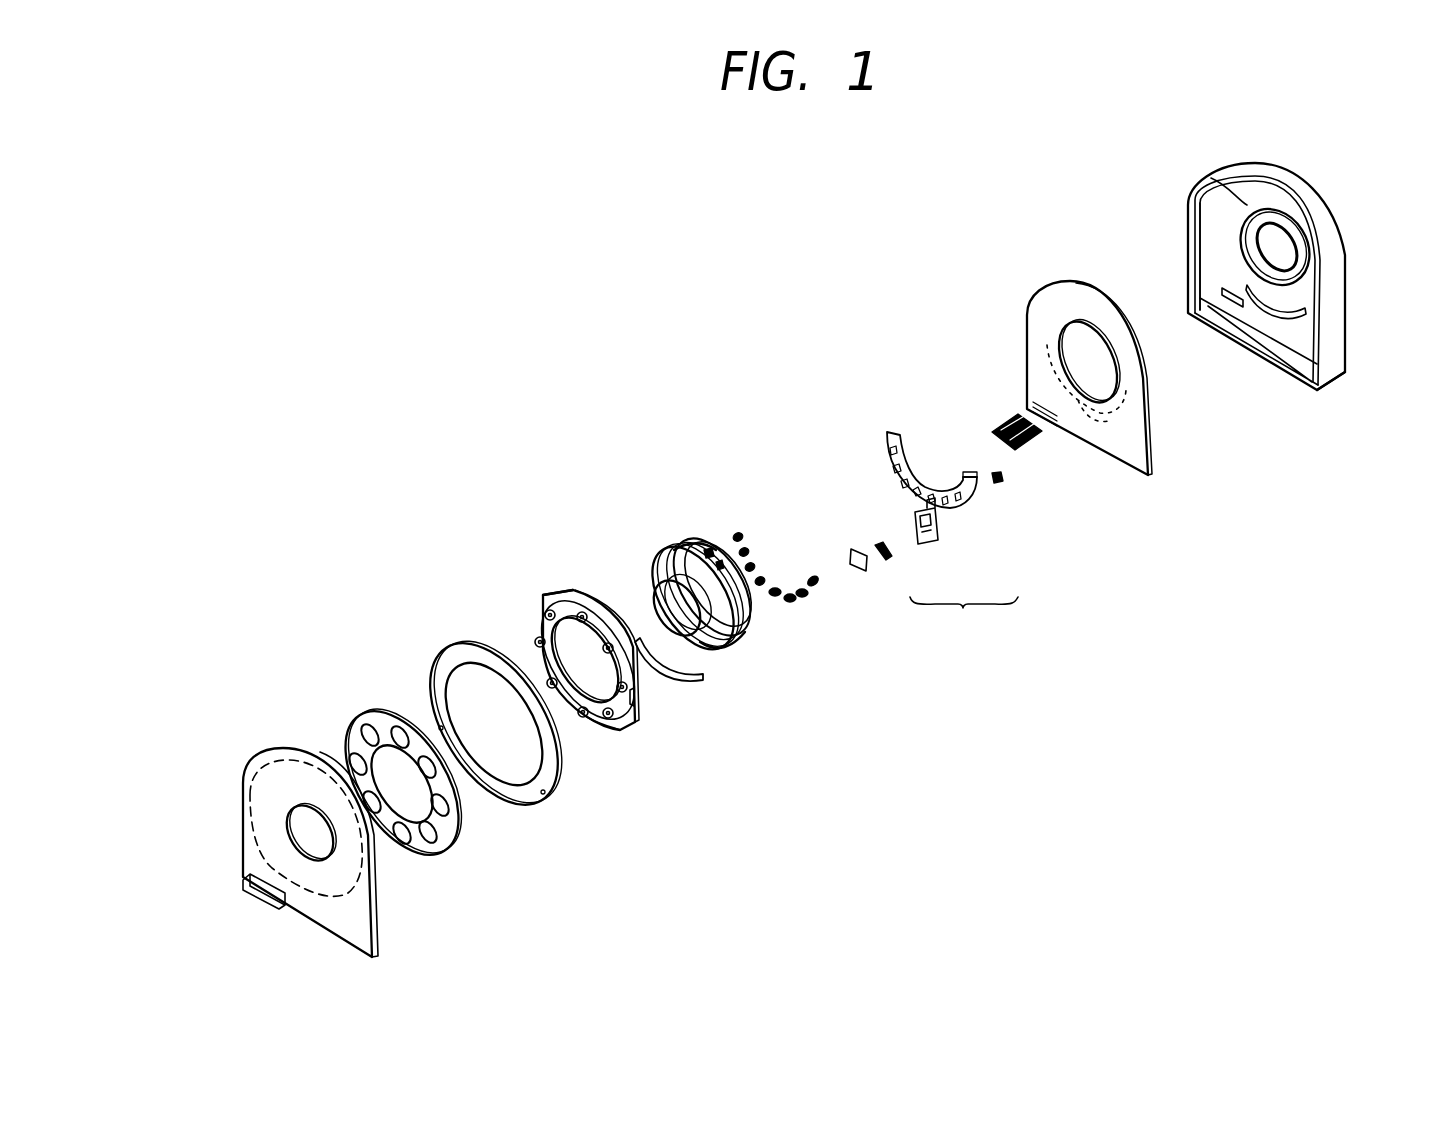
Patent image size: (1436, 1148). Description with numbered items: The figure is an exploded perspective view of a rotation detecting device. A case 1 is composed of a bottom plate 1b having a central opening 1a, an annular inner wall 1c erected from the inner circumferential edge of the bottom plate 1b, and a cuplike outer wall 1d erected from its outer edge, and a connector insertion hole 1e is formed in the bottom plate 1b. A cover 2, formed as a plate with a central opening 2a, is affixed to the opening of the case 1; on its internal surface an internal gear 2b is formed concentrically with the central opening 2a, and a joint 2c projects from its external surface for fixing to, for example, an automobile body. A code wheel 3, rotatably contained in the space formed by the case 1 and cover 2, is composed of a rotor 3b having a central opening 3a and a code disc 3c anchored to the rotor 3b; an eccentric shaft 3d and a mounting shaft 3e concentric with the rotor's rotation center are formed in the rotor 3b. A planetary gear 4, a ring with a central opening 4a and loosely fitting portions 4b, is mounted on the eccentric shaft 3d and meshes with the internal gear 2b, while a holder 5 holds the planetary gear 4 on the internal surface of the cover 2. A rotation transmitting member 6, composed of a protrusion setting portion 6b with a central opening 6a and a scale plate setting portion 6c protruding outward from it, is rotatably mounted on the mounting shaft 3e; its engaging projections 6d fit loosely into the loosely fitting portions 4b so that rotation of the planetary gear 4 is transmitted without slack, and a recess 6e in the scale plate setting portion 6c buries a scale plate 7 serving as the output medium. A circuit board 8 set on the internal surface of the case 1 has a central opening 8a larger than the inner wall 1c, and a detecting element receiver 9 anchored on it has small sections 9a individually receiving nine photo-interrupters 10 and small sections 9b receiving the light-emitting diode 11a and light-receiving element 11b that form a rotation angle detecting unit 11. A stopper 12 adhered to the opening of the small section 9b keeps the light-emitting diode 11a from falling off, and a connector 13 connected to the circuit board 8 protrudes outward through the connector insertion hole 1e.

The case 1 is at (1320, 204).
The central opening 1a is at (1275, 242).
The bottom plate 1b is at (1228, 226).
The annular inner wall 1c is at (1218, 178).
The cuplike outer wall 1d is at (1330, 303).
The connector insertion hole 1e is at (1222, 285).
The cover 2 is at (281, 749).
The central opening 2a is at (312, 832).
The internal gear 2b is at (250, 812).
The joint 2c is at (272, 905).
The code wheel 3 is at (660, 562).
The central opening 3a is at (664, 604).
The rotor 3b is at (666, 566).
The code disc 3c is at (737, 618).
The eccentric shaft 3d is at (723, 638).
The mounting shaft 3e is at (690, 545).
The planetary gear 4 is at (366, 718).
The central opening 4a is at (400, 770).
The loosely fitting portions 4b is at (446, 812).
The holder 5 is at (462, 645).
The rotation transmitting member 6 is at (566, 590).
The central opening 6a is at (567, 647).
The protrusion setting portion 6b is at (549, 597).
The scale plate setting portion 6c is at (630, 722).
The engaging projections 6d is at (585, 612).
The recess 6e is at (607, 728).
The scale plate 7 is at (705, 677).
The circuit board 8 is at (1066, 283).
The central opening 8a is at (1100, 362).
The detecting element receiver 9 is at (888, 430).
The small sections 9a is at (895, 482).
The small sections 9b is at (915, 520).
The photo-interrupters 10 is at (768, 492).
The rotation angle detecting unit 11 is at (964, 620).
The light-emitting diode 11a is at (886, 560).
The light-receiving element 11b is at (996, 485).
The stopper 12 is at (857, 572).
The connector 13 is at (1006, 420).